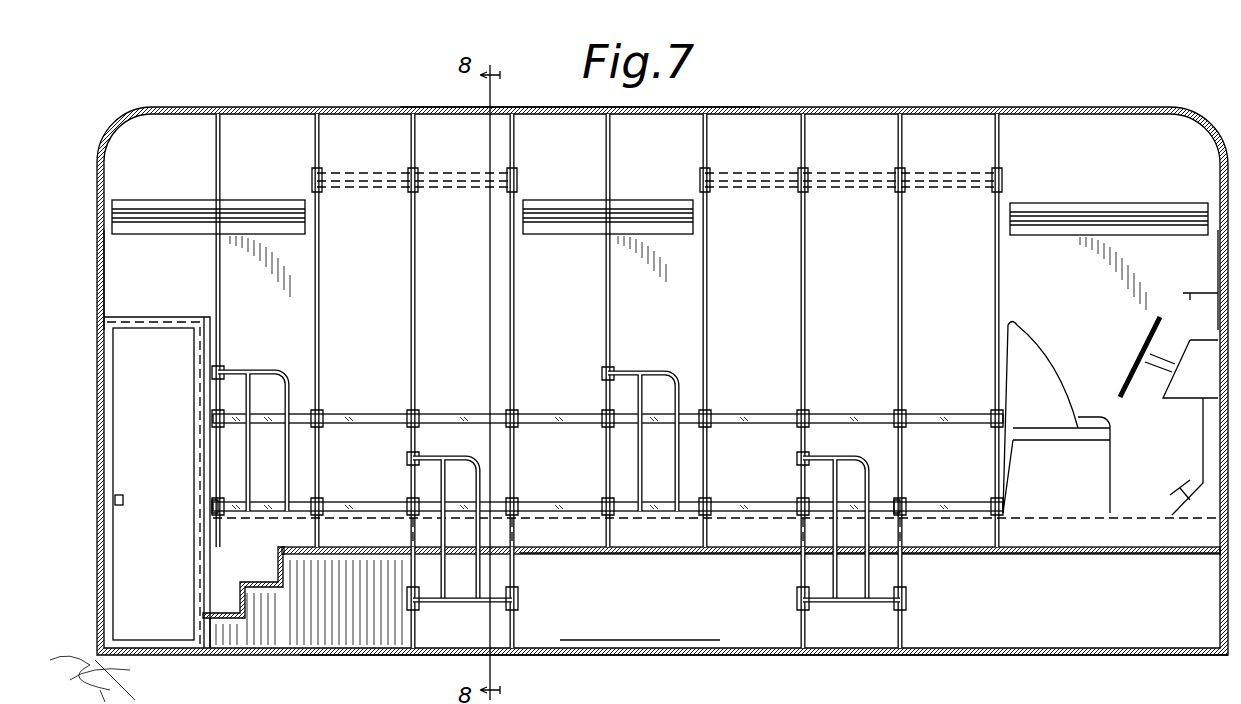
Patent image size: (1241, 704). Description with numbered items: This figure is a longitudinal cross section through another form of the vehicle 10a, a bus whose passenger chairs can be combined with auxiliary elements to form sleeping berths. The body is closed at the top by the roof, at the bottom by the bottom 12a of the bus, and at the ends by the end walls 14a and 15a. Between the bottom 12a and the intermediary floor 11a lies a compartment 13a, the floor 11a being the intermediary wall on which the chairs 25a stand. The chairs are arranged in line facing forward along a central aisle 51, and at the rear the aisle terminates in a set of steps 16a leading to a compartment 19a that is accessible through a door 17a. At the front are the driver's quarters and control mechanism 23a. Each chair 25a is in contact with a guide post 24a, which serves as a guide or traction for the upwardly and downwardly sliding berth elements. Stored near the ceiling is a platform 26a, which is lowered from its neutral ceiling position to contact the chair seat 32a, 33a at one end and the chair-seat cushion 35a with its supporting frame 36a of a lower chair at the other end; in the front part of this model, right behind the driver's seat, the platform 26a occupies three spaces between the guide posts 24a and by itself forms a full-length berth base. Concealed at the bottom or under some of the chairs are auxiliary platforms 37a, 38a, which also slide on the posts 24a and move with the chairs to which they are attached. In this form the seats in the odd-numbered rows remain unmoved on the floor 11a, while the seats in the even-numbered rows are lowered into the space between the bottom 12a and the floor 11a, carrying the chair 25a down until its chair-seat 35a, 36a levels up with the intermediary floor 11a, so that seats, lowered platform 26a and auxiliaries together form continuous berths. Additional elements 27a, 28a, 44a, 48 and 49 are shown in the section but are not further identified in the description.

The vehicle 10a is at (943, 106).
The intermediary floor 11a is at (1047, 513).
The bottom of the bus 12a is at (1012, 656).
The compartment 13a is at (640, 614).
The end wall 14a is at (1183, 293).
The end wall 15a is at (106, 280).
The steps 16a is at (232, 606).
The door 17a is at (125, 382).
The compartment 19a is at (125, 317).
The driver's quarters and control mechanism 23a is at (1103, 357).
The guide posts 24a is at (995, 266).
The chair 25a is at (850, 460).
The platform 26a is at (967, 434).
The luggage rack 27a is at (1095, 212).
The clamp brackets 28a is at (995, 410).
The chair seat 32a is at (880, 498).
The chair seat 33a is at (885, 510).
The chair-seat cushion 35a is at (748, 502).
The chair-seat supporting frame 36a is at (762, 518).
The platform 37a is at (618, 496).
The platform 38a is at (662, 511).
The upper rail 44a is at (922, 414).
The cross bar 48 is at (858, 604).
The leg brackets 49 is at (906, 605).
The aisle 51 is at (572, 556).